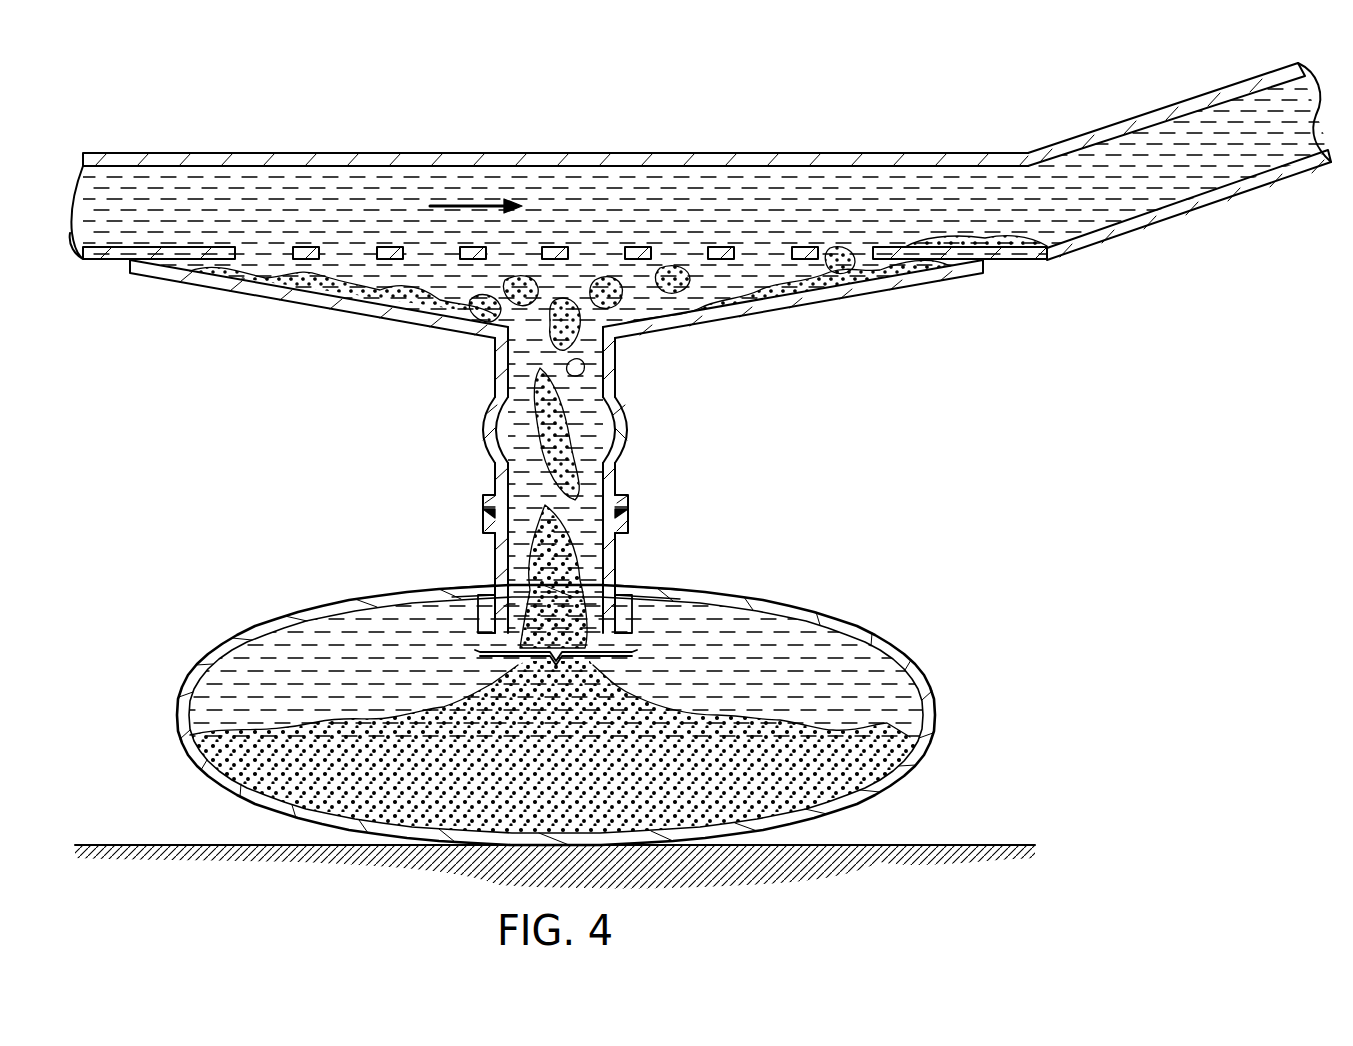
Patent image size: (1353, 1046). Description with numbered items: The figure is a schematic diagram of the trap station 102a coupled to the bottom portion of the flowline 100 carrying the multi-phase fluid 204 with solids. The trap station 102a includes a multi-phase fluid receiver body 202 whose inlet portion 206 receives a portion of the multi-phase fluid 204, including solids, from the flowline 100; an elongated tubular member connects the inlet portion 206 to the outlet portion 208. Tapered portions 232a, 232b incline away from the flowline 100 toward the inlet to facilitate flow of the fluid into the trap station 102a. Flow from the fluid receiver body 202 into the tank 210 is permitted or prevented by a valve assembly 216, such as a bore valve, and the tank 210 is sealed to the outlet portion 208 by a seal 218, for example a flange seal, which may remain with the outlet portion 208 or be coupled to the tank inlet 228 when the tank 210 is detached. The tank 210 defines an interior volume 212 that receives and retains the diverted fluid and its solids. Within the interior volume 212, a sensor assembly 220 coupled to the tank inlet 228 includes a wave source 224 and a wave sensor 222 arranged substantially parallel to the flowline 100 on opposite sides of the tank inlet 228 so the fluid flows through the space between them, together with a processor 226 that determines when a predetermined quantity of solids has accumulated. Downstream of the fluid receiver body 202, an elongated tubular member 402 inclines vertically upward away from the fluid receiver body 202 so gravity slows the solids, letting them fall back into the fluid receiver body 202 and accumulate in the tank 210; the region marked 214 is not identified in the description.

The flowline 100 is at (449, 149).
The elongated tubular member 402 is at (1173, 104).
The inlet portion 206 is at (340, 248).
The multi-phase fluid 204 is at (582, 282).
The tapered portion 232b is at (292, 306).
The tapered portion 232a is at (797, 307).
The multi-phase fluid receiver body 202 is at (541, 480).
The valve assembly 216 is at (634, 431).
The seal 218 is at (628, 514).
The trap station 102a is at (537, 593).
The outlet portion 208 is at (527, 543).
The tank inlet 228 is at (585, 587).
The wave sensor 222 is at (487, 605).
The processor 226 is at (478, 628).
The wave source 224 is at (632, 618).
The sensor assembly 220 is at (556, 672).
The interior volume 212 is at (813, 682).
The tank 210 is at (176, 740).
The settled sediment 214 is at (878, 757).